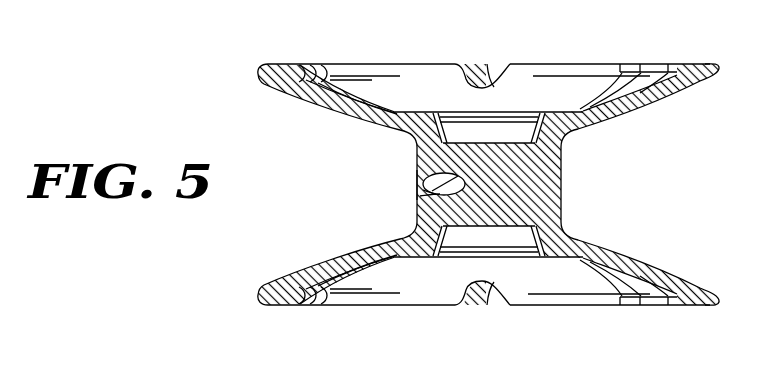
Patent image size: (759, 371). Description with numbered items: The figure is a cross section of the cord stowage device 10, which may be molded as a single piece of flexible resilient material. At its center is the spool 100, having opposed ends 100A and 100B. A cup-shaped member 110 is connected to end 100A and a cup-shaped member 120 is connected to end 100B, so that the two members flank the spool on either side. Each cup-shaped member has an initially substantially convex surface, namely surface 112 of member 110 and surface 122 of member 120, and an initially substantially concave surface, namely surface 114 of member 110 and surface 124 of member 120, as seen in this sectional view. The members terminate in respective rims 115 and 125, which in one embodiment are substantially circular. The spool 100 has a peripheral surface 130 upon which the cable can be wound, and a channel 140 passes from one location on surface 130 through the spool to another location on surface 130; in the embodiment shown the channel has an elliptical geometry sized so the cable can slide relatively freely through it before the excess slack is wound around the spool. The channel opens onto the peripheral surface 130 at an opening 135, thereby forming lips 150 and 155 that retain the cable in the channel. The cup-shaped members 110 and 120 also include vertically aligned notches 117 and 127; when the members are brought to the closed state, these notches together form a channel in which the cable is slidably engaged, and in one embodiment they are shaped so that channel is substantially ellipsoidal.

The cord stowage device 10 is at (137, 138).
The spool 100 is at (563, 195).
The first end of spool 100A is at (563, 147).
The second end of spool 100B is at (563, 237).
The cup-shaped member 110 is at (263, 83).
The surface 112 is at (297, 101).
The surface 114 is at (583, 73).
The rim 115 is at (296, 64).
The notch 117 is at (495, 86).
The cup-shaped member 120 is at (262, 299).
The surface 122 is at (301, 266).
The surface 124 is at (633, 307).
The rim 125 is at (296, 306).
The notch 127 is at (492, 290).
The peripheral surface 130 is at (417, 151).
The opening 135 is at (423, 185).
The channel 140 is at (418, 192).
The lip 150 is at (422, 180).
The lip 155 is at (420, 196).